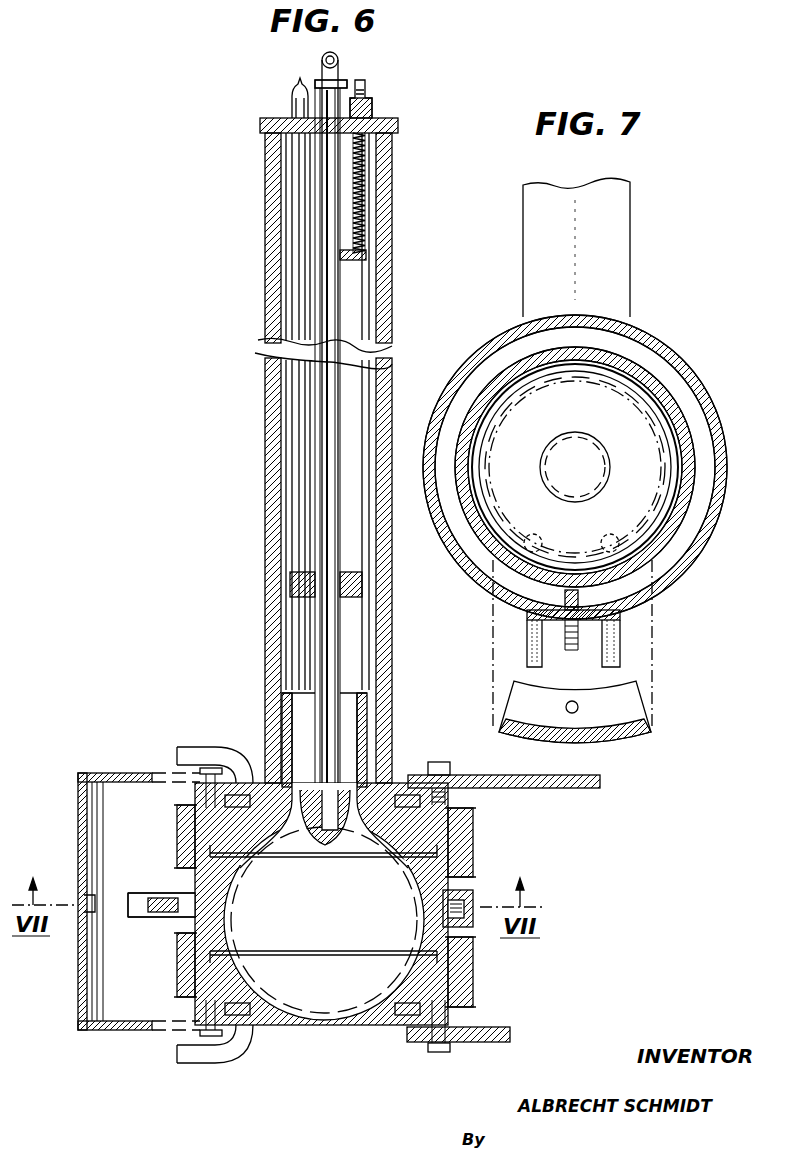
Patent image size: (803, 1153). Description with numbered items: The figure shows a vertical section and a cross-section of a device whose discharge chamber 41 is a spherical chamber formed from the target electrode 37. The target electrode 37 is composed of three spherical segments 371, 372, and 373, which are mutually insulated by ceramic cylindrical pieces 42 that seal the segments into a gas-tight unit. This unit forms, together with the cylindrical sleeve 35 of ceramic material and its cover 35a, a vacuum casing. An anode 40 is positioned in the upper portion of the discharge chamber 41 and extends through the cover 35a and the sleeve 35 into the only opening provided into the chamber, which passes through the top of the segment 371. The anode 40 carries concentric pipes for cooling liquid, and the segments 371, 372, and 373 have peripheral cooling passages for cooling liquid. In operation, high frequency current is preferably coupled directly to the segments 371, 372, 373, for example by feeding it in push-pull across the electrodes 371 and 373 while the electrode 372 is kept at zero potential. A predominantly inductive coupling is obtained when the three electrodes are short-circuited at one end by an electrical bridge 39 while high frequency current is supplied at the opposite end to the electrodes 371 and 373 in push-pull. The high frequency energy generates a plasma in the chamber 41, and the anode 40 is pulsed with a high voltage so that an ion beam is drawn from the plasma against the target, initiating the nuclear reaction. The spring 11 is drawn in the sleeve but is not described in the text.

In FIG. 6, the spring 11 is at (375, 193).
In FIG. 6, the cylindrical sleeve 35 is at (268, 334).
In FIG. 6, the cover 35a is at (397, 118).
In FIG. 6, the target electrode 37 is at (168, 957).
In FIG. 6, the spherical segment 371 is at (475, 827).
In FIG. 7, the spherical segment 371 is at (665, 455).
In FIG. 6, the spherical segment 372 is at (455, 954).
In FIG. 7, the spherical segment 372 is at (660, 384).
In FIG. 6, the spherical segment 373 is at (392, 1000).
In FIG. 6, the electrical bridge 39 is at (116, 901).
In FIG. 7, the electrical bridge 39 is at (650, 740).
In FIG. 6, the anode 40 is at (346, 833).
In FIG. 7, the anode 40 is at (590, 480).
In FIG. 6, the discharge chamber 41 is at (320, 935).
In FIG. 6, the ceramic cylindrical pieces 42 is at (178, 839).